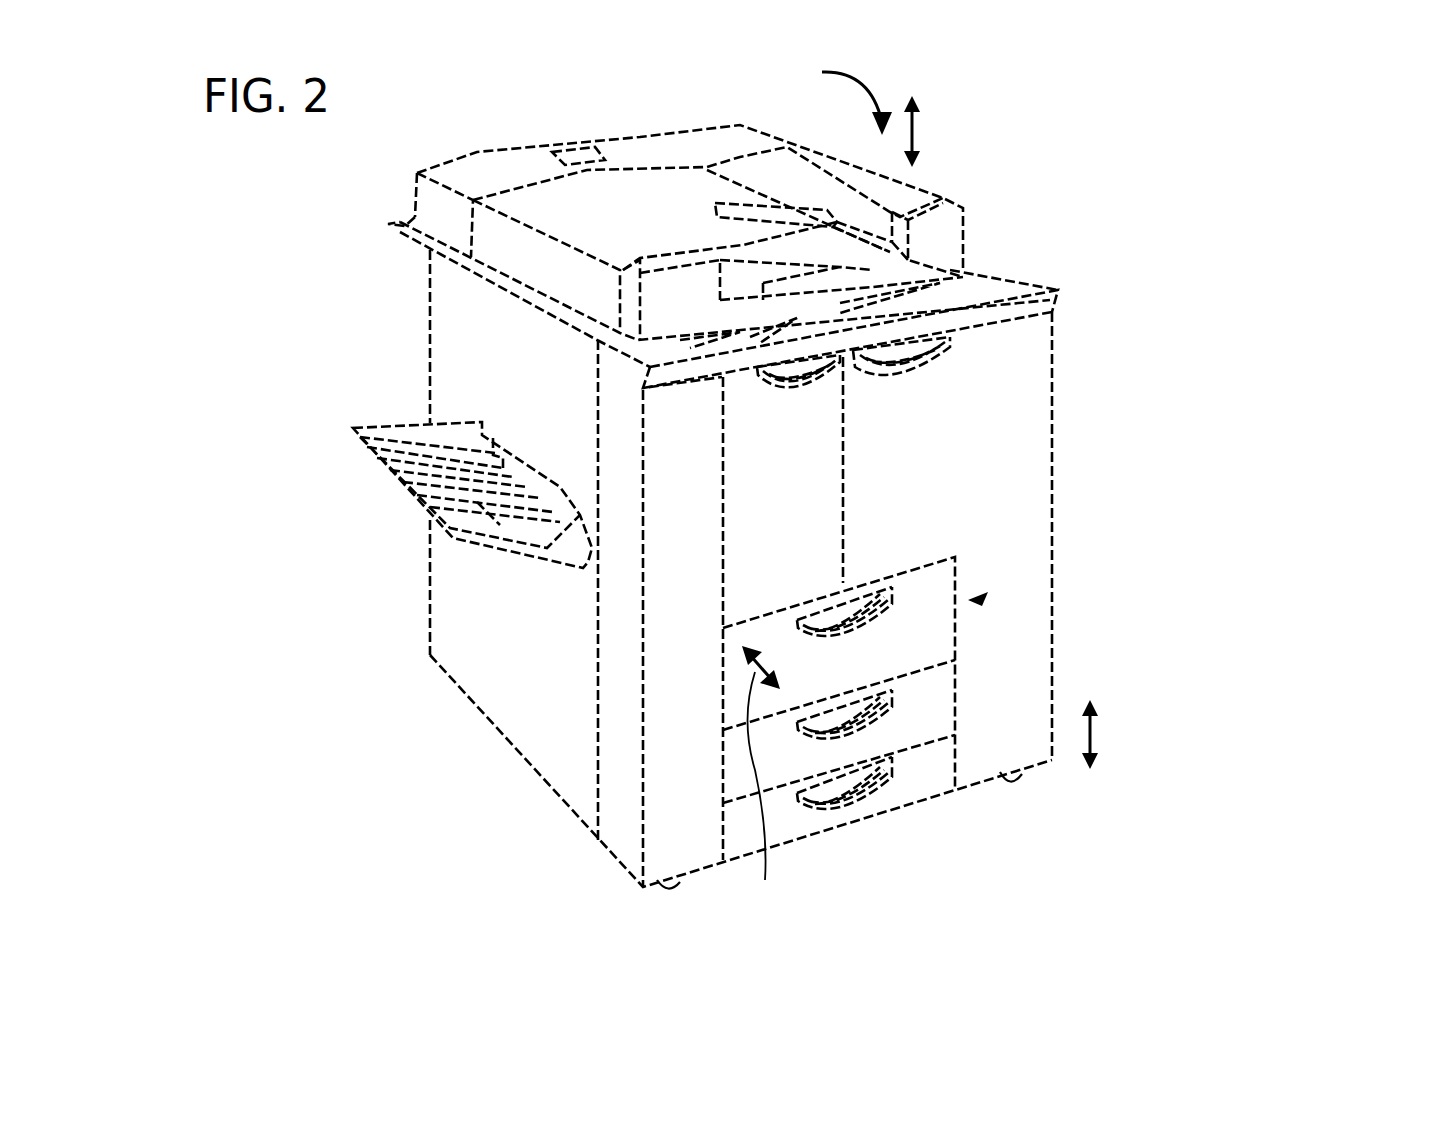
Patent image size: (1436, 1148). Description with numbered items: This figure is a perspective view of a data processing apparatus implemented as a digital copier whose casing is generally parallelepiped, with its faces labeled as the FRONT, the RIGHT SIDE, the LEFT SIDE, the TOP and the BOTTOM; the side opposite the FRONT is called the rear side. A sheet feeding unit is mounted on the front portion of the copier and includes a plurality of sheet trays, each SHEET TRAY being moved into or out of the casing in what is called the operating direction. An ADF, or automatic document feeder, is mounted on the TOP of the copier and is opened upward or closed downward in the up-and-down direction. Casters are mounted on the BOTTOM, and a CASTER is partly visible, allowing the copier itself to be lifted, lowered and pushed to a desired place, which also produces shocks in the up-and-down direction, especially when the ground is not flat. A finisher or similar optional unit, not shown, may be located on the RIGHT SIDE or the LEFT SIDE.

The ADF (Automatic Document Feeder) ADF is at (487, 160).
The top TOP is at (977, 283).
The left side LEFT SIDE is at (448, 346).
The front side FRONT is at (1033, 415).
The right side RIGHT SIDE is at (1050, 495).
The bottom BOTTOM is at (527, 758).
The sheet tray SHEET TRAY is at (945, 643).
The caster CASTER is at (1010, 788).